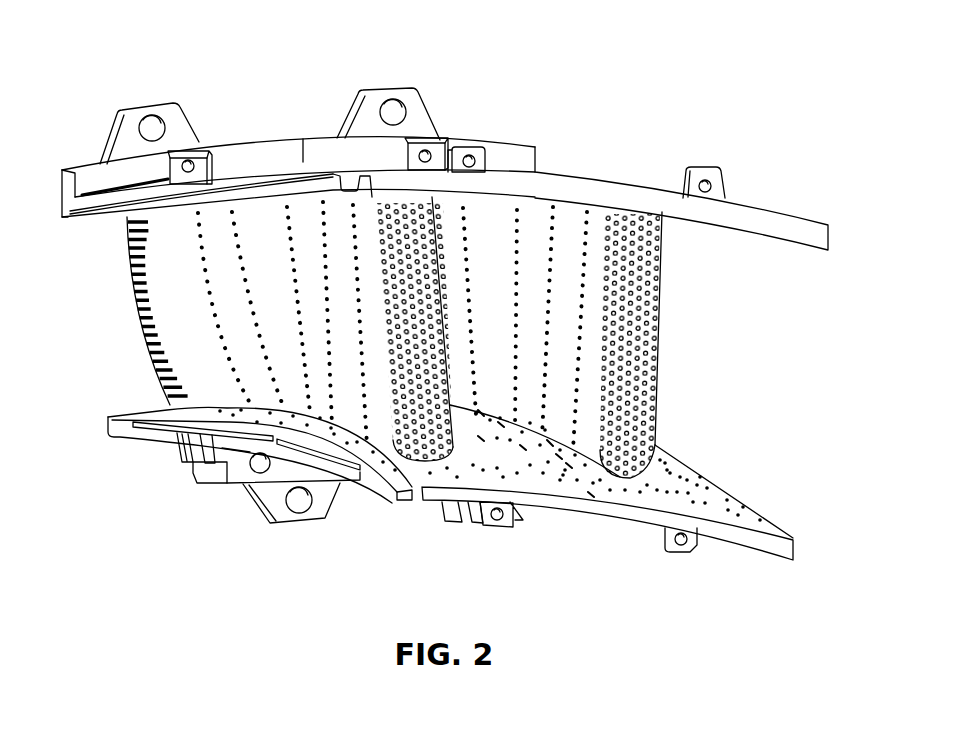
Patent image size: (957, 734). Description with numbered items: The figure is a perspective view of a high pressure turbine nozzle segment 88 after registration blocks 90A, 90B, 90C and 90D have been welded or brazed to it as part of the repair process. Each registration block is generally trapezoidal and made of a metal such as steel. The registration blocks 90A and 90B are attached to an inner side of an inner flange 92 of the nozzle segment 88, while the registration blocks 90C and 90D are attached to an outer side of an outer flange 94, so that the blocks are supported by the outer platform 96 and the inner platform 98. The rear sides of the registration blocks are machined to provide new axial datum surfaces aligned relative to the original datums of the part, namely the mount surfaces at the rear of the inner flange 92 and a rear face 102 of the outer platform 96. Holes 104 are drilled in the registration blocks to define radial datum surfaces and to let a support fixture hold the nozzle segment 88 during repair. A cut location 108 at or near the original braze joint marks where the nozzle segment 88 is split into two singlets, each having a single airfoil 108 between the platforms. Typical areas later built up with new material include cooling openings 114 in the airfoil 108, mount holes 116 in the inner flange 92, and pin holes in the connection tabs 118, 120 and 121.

The HPT nozzle segment 88 is at (585, 70).
The registration block 90A is at (281, 514).
The registration block 90B is at (463, 521).
The registration block 90C is at (111, 127).
The registration block 90D is at (350, 110).
The inner flange 92 is at (212, 486).
The outer flange 94 is at (83, 172).
The outer platform 96 is at (88, 220).
The inner platform 98 is at (132, 415).
The rear face of the outer platform 102 is at (60, 214).
The holes 104 is at (139, 125).
The airfoil / cut location 108 is at (546, 192).
The cooling openings 114 is at (657, 242).
The mount holes 116 is at (193, 472).
The connection tab 118 is at (512, 507).
The connection tab 120 is at (469, 147).
The connection tab 121 is at (190, 152).